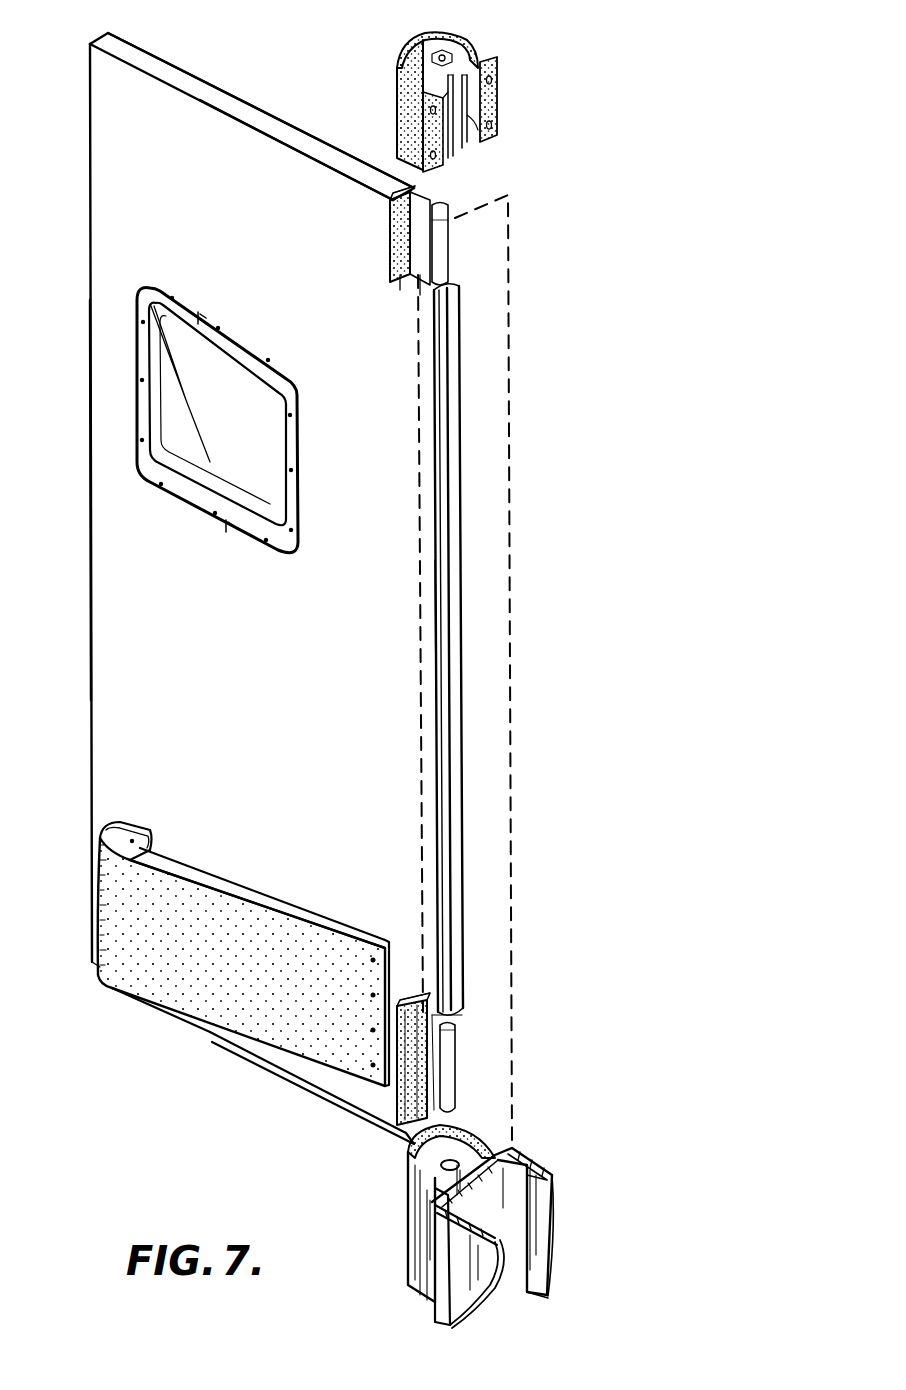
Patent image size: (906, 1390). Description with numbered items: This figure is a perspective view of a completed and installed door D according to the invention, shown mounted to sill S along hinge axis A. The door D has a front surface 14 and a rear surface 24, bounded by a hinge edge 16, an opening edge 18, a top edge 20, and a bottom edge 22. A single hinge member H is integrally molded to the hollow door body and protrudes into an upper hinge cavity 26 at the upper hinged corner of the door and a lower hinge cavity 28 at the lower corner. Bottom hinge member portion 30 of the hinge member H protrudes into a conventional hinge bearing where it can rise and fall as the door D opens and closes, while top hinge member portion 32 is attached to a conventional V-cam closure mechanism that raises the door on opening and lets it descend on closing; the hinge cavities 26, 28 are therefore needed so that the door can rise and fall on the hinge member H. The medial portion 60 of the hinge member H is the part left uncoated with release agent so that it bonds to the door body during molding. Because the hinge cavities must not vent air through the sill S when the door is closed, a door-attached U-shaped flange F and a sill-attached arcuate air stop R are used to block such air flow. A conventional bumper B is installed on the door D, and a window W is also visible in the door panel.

The front surface 14 is at (290, 806).
The hinge edge 16 is at (448, 648).
The opening edge 18 is at (90, 550).
The top edge 20 is at (230, 100).
The bottom edge 22 is at (225, 1036).
The rear surface 24 is at (298, 127).
The upper hinge cavity 26 is at (438, 206).
The lower hinge cavity 28 is at (432, 1108).
The bottom hinge member portion 30 is at (456, 1086).
The top hinge member portion 32 is at (450, 232).
The medial portion 60 is at (437, 621).
The hinge axis A is at (464, 31).
The bumper B is at (252, 969).
The door D is at (243, 701).
The U-shaped flange F is at (438, 208).
The hinge member H is at (448, 264).
The arcuate air stop R is at (478, 47).
The sill S is at (552, 1170).
The window W is at (244, 422).